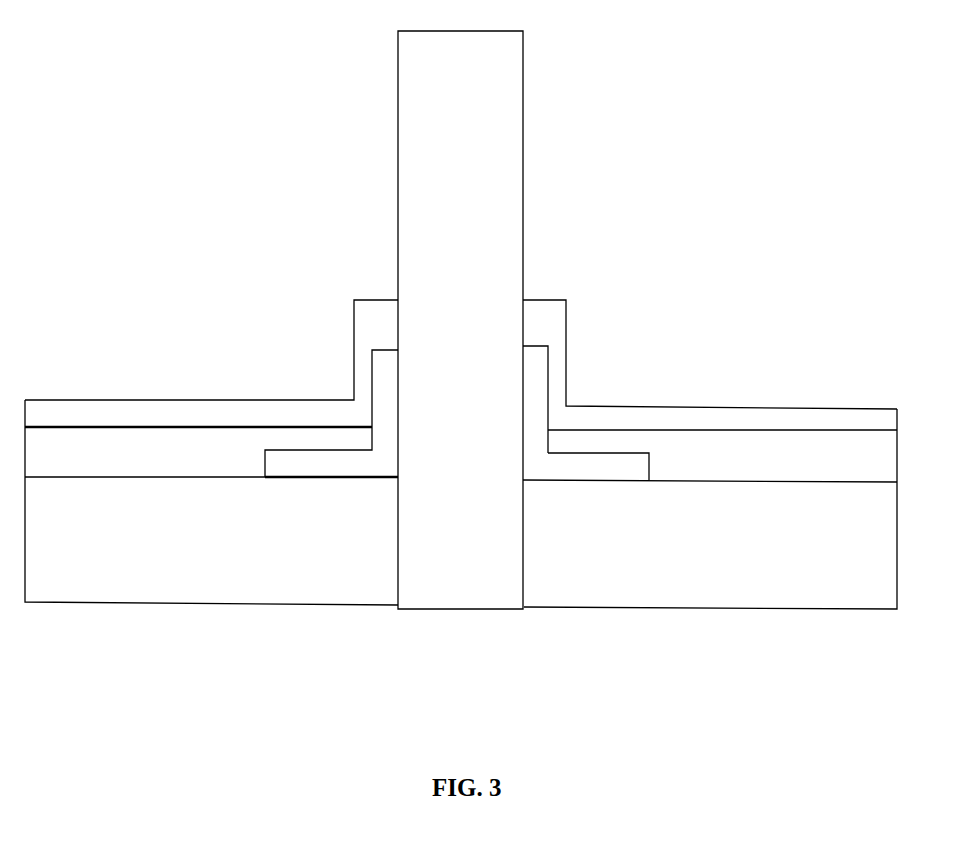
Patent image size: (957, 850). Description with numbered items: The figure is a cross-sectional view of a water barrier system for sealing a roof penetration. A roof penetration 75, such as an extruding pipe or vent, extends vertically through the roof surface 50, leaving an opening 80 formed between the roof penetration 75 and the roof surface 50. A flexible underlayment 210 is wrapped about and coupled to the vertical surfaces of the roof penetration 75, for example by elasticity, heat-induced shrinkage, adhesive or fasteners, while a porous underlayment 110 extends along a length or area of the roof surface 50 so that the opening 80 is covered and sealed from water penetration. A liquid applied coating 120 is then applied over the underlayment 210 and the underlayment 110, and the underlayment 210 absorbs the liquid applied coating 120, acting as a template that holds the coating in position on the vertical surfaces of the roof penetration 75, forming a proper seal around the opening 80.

The roof surface 50 is at (461, 504).
The roof penetration 75 is at (493, 145).
The opening 80 is at (393, 480).
The underlayment 110 is at (740, 432).
The liquid applied coating 120 is at (633, 403).
The underlayment 210 is at (532, 390).